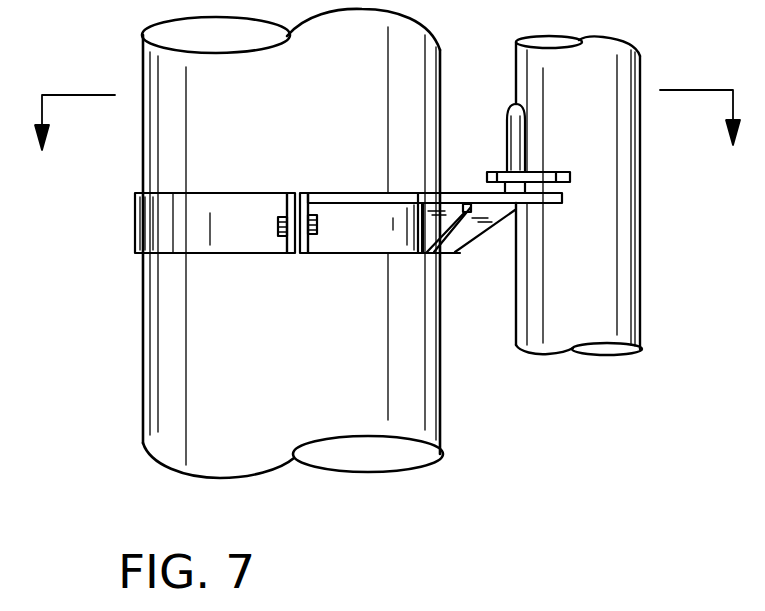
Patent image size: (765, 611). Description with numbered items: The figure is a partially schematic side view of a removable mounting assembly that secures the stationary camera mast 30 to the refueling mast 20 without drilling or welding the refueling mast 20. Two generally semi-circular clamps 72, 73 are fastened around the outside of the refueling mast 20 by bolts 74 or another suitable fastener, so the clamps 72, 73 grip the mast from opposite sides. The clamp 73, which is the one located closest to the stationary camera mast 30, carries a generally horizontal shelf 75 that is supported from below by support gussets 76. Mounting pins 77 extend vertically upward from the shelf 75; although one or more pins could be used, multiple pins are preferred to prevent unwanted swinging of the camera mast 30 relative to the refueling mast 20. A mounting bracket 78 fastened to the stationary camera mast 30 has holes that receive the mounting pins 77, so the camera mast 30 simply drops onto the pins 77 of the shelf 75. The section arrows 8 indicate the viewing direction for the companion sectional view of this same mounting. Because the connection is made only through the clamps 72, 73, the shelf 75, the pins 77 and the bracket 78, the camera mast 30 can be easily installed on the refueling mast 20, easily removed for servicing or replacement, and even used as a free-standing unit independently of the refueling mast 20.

The section line 8- 8 is at (387, 139).
The refueling mast 20 is at (168, 408).
The stationary camera mast 30 is at (627, 68).
The semi-circular clamp 72 is at (173, 207).
The semi-circular clamp 73 is at (377, 220).
The bolts 74 is at (275, 229).
The horizontal shelf 75 is at (473, 192).
The support gussets 76 is at (480, 213).
The mounting pins 77 is at (513, 103).
The mounting bracket 78 is at (548, 172).